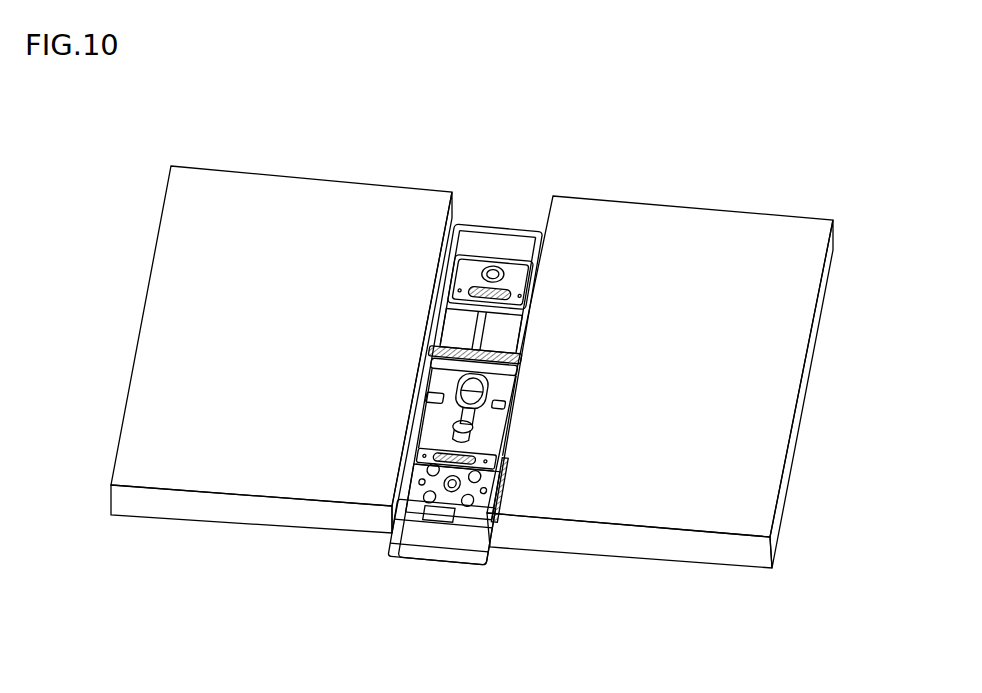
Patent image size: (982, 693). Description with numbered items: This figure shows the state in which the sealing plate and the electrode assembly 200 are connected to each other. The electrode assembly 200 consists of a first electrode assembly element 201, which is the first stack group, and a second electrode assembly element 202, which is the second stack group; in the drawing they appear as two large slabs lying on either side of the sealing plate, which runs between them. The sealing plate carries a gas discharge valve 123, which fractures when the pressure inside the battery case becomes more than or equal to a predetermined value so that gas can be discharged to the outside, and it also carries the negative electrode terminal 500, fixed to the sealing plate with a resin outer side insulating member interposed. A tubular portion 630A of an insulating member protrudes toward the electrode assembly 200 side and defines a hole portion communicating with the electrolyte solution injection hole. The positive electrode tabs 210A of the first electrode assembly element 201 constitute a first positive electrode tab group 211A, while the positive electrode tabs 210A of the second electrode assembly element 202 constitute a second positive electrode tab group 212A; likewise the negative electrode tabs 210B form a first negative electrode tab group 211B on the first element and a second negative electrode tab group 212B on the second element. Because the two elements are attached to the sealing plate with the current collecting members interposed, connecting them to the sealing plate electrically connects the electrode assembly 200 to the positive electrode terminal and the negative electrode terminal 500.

The electrode assembly 200 is at (617, 108).
The first electrode assembly element 201 is at (597, 228).
The second electrode assembly element 202 is at (382, 218).
The negative electrode terminal 500 is at (494, 265).
The gas discharge valve 123 is at (470, 385).
The tubular portion 630A is at (473, 425).
The positive electrode tabs 210A is at (608, 610).
The first positive electrode tab group 211A is at (483, 438).
The second positive electrode tab group 212A is at (438, 437).
The negative electrode tabs 210B is at (385, 592).
The first negative electrode tab group 211B is at (500, 335).
The second negative electrode tab group 212B is at (460, 317).